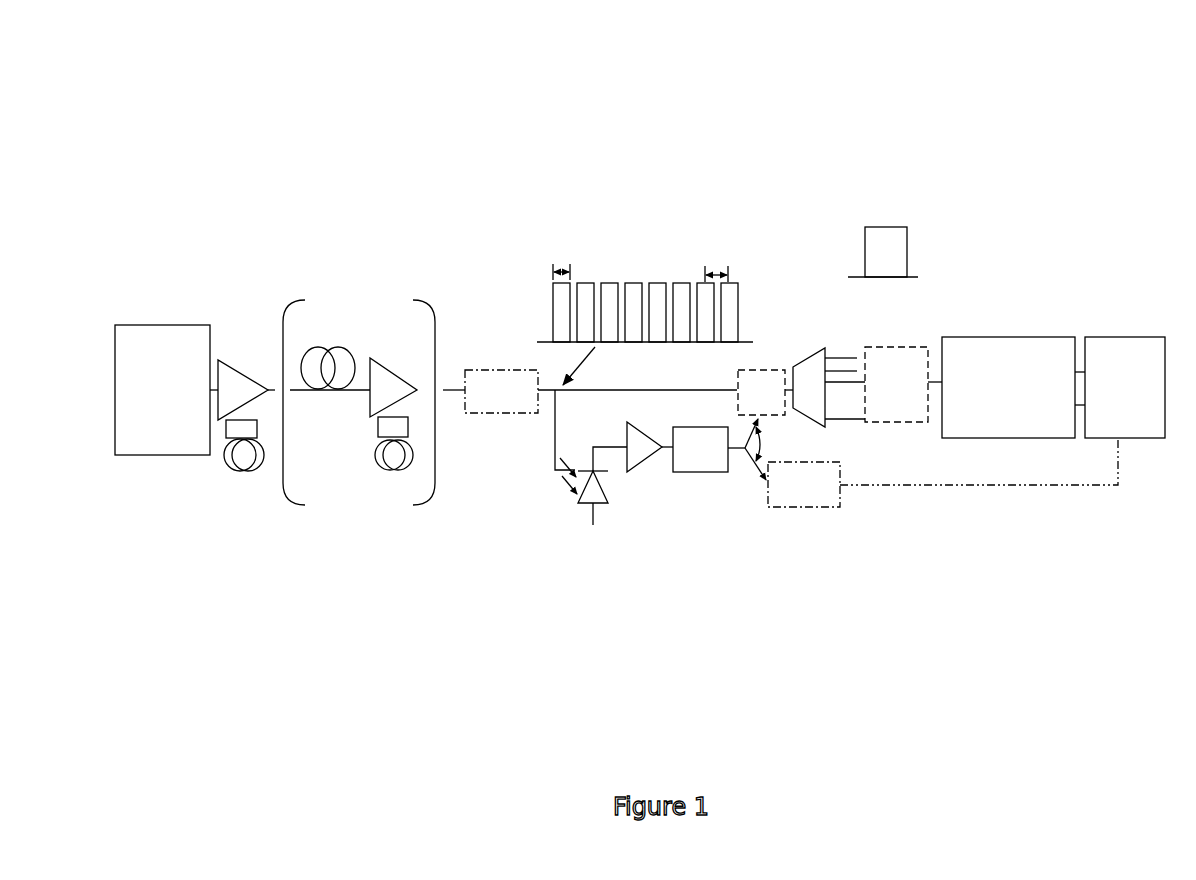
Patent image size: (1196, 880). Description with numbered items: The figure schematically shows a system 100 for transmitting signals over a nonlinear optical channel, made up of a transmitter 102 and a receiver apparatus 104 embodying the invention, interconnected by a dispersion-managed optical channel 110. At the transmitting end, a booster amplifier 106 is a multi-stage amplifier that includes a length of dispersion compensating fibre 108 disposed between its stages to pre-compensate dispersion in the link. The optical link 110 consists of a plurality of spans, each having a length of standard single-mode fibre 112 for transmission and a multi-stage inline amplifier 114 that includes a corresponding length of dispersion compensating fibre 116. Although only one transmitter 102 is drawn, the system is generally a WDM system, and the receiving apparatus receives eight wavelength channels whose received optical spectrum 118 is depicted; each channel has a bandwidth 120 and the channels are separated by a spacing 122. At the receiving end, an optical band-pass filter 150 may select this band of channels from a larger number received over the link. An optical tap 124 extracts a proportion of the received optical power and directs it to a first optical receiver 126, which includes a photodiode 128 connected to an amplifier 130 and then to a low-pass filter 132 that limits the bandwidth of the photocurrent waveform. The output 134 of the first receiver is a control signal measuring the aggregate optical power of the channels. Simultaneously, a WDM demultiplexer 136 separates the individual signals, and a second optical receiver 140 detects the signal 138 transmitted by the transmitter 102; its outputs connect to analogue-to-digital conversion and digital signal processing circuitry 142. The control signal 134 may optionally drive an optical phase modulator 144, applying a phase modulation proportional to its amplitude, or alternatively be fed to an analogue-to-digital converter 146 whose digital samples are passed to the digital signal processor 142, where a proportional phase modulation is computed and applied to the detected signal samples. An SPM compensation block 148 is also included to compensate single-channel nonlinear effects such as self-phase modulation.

The system 100 is at (920, 118).
The transmitter 102 is at (168, 276).
The receiver apparatus 104 is at (1177, 645).
The booster amplifier 106 is at (245, 372).
The dispersion compensating fibre 108 is at (228, 462).
The dispersion-managed optical channel 110 is at (358, 232).
The standard single-mode fibre 112 is at (320, 405).
The multi-stage inline amplifier 114 is at (385, 358).
The dispersion compensating fibre 116 is at (380, 463).
The received optical spectrum 118 is at (538, 203).
The bandwidth 120 is at (560, 258).
The spacing 122 is at (717, 258).
The optical tap 124 is at (546, 400).
The first optical receiver 126 is at (743, 563).
The photodiode 128 is at (583, 507).
The amplifier 130 is at (650, 452).
The low-pass filter 132 is at (700, 472).
The control signal output 134 is at (738, 457).
The WDM demultiplexer 136 is at (823, 346).
The signal 138 is at (905, 232).
The second optical receiver 140 is at (1013, 387).
The digital signal processing circuitry 142 is at (1125, 387).
The optical phase modulator 144 is at (765, 370).
The analogue-to-digital converter 146 is at (843, 500).
The SPM compensation block 148 is at (893, 347).
The optical band-pass filter 150 is at (510, 370).